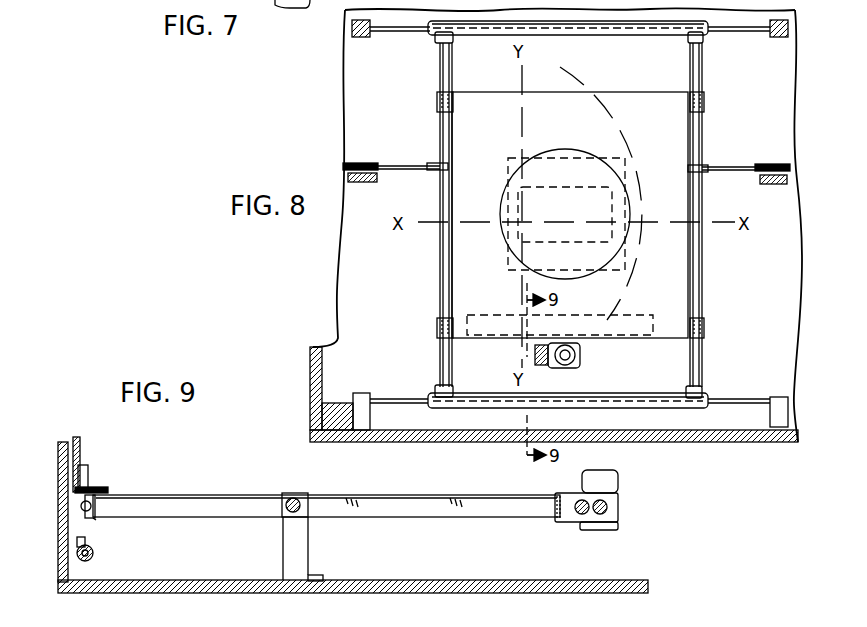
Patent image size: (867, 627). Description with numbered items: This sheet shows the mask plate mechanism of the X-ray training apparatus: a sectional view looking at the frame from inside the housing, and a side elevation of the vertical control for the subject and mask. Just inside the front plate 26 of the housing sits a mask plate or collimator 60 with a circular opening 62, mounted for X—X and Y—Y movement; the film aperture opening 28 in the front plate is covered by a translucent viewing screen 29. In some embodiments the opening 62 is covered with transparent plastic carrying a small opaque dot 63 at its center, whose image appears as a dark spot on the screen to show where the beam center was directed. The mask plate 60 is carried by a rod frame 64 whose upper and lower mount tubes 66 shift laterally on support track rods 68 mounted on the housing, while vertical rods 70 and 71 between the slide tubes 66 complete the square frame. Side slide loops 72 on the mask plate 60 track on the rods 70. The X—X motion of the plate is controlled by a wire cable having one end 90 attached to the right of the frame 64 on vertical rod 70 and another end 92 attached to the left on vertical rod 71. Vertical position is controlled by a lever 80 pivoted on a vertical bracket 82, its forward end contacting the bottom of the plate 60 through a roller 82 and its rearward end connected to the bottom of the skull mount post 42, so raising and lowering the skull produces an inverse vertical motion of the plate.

In FIG. 9, the front plate 26 is at (57, 444).
In FIG. 8, the film aperture opening 28 is at (513, 234).
In FIG. 8, the translucent viewing screen 29 is at (512, 268).
In FIG. 9, the skull mount post 42 is at (620, 482).
In FIG. 8, the mask plate 60 is at (647, 92).
In FIG. 8, the circular opening 62 is at (584, 131).
In FIG. 8, the opaque dot 63 is at (563, 214).
In FIG. 8, the rod frame 64 is at (590, 215).
In FIG. 8, the mount tubes 66 is at (463, 34).
In FIG. 9, the mount tubes 66 is at (82, 447).
In FIG. 8, the support track rods 68 is at (380, 32).
In FIG. 9, the support track rods 68 is at (95, 558).
In FIG. 8, the vertical rod 70 is at (702, 367).
In FIG. 8, the vertical rod 71 is at (446, 364).
In FIG. 9, the vertical rod 71 is at (92, 540).
In FIG. 8, the side slide loops 72 is at (437, 108).
In FIG. 9, the lever 80 is at (197, 497).
In FIG. 8, the vertical bracket 82 is at (571, 367).
In FIG. 9, the vertical bracket 82 is at (95, 516).
In FIG. 8, the cable end 90 is at (741, 166).
In FIG. 8, the cable end 92 is at (401, 172).